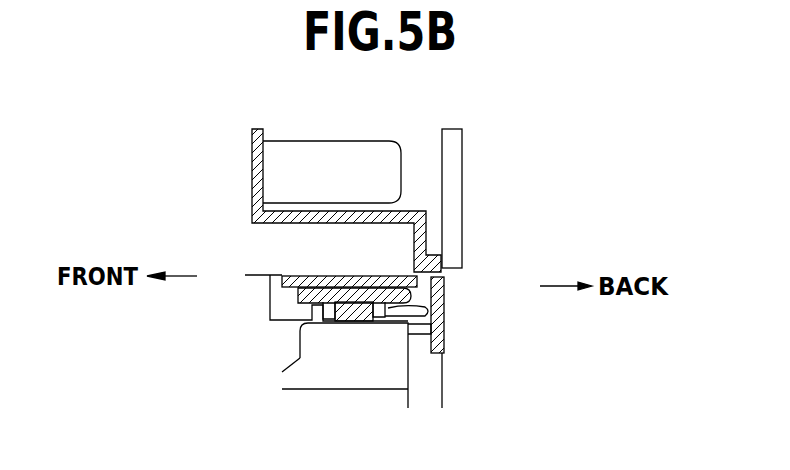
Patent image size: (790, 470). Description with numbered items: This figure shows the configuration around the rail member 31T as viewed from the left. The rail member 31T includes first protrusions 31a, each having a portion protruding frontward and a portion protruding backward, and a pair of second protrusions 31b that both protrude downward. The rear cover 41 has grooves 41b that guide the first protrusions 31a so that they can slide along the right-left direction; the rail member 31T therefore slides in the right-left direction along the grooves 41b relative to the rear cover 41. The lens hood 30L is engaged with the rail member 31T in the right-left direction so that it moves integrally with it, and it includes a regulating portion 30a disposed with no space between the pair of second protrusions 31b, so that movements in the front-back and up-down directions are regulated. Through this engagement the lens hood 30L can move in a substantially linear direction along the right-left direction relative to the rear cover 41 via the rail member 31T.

The rear cover 41 is at (427, 229).
The grooves 41b is at (429, 312).
The first protrusions 31a is at (310, 275).
The rail member 31T is at (357, 288).
The second protrusions 31b is at (330, 302).
The regulating portion 30a is at (348, 302).
The lens hood 30L is at (444, 339).